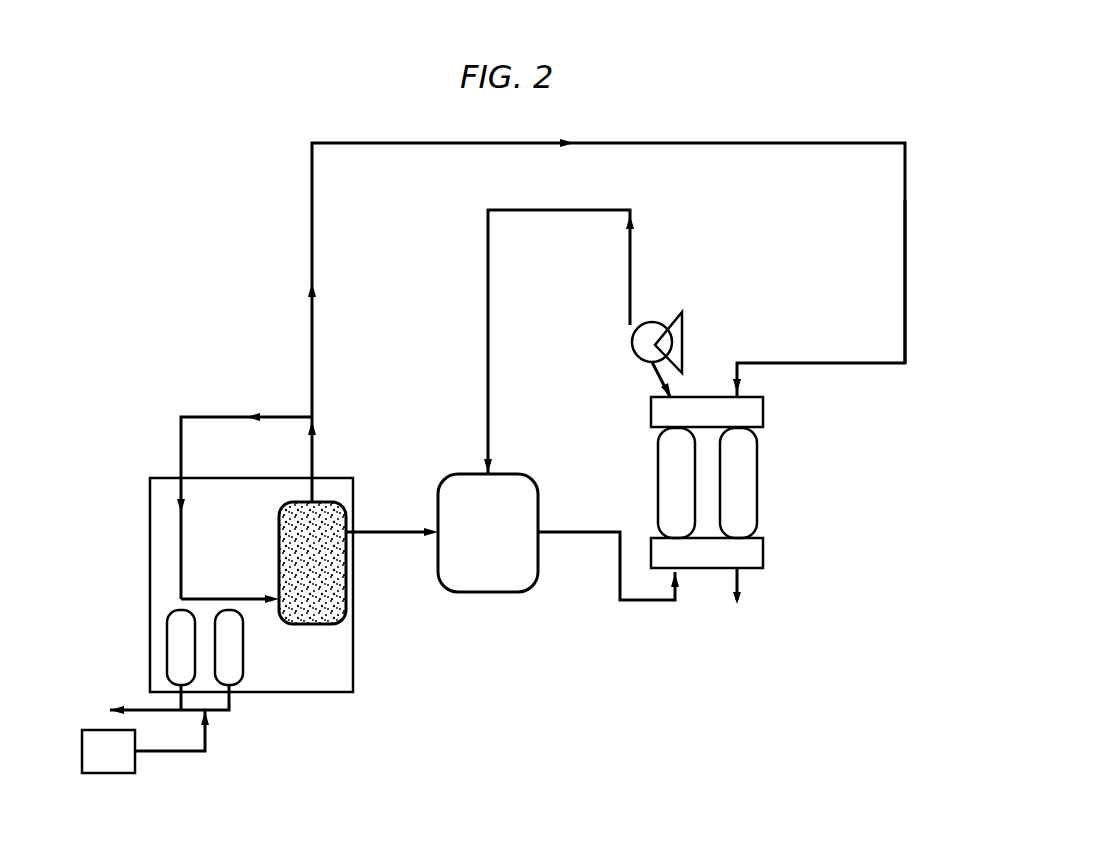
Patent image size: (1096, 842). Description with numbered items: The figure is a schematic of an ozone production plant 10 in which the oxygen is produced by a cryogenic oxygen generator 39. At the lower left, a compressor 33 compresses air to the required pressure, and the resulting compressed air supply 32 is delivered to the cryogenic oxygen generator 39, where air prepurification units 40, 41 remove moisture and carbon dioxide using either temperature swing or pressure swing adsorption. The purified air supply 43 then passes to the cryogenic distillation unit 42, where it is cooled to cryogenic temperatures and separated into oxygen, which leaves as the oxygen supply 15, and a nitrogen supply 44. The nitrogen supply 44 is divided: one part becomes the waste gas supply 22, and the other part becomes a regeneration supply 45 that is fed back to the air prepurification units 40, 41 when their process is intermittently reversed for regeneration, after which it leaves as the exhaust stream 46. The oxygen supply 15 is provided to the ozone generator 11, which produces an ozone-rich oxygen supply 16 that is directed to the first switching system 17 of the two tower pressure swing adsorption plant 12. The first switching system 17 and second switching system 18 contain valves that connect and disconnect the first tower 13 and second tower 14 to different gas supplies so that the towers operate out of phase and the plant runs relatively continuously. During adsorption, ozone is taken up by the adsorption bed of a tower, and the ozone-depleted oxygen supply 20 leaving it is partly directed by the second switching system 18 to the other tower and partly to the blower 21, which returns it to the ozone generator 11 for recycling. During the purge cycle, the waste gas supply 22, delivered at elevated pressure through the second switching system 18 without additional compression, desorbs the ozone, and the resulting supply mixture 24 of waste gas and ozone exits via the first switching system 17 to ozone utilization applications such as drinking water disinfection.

The ozone production plant 10 is at (660, 634).
The ozone generator 11 is at (485, 594).
The two tower pressure swing adsorption plant 12 is at (810, 508).
The first tower 13 is at (658, 472).
The second tower 14 is at (757, 472).
The oxygen supply 15 is at (372, 530).
The ozone-rich oxygen supply 16 is at (574, 530).
The first switching system 17 is at (765, 558).
The second switching system 18 is at (765, 414).
The ozone-depleted oxygen supply 20 is at (652, 376).
The blower 21 is at (683, 332).
The waste gas supply 22 is at (907, 260).
The supply mixture of waste gas and ozone 24 is at (740, 578).
The compressed air supply 32 is at (182, 754).
The compressor 33 is at (105, 775).
The cryogenic oxygen generator 39 is at (330, 694).
The air prepurification unit 40 is at (167, 650).
The air prepurification unit 41 is at (243, 652).
The cryogenic distillation unit 42 is at (315, 626).
The purified air supply 43 is at (202, 598).
The nitrogen supply 44 is at (314, 452).
The regeneration supply 45 is at (180, 448).
The exhaust stream 46 is at (130, 698).